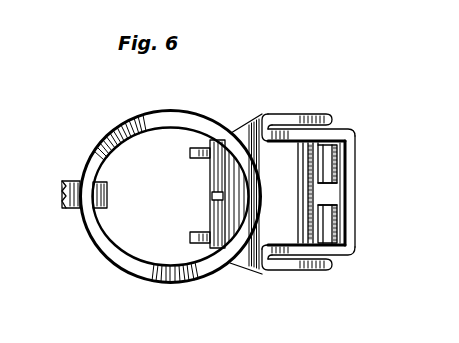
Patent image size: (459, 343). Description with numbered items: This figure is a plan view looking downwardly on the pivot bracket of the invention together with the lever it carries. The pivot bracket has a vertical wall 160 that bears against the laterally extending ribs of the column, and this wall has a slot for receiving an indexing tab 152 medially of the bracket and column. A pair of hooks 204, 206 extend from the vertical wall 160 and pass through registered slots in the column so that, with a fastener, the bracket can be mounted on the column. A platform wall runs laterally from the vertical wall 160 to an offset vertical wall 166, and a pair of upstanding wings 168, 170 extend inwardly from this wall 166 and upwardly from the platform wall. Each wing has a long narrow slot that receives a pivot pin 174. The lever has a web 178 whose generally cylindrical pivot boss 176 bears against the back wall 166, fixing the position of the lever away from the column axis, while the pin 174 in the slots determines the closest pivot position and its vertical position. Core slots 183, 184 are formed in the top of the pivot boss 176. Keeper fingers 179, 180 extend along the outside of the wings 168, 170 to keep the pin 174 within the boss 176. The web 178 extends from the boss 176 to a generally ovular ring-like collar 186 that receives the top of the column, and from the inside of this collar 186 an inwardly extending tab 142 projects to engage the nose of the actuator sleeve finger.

The inwardly extending tab 142 is at (108, 208).
The indexing tab 152 is at (217, 194).
The vertical wall 160 is at (210, 176).
The offset vertical wall 166 is at (349, 176).
The upstanding wing 168 is at (322, 252).
The upstanding wing 170 is at (320, 133).
The pivot pin 174 is at (330, 150).
The pivot boss 176 is at (337, 222).
The web 178 is at (290, 188).
The keeper finger 179 is at (314, 271).
The keeper finger 180 is at (310, 93).
The core slot 183 is at (325, 163).
The core slot 184 is at (325, 225).
The ring-like collar 186 is at (160, 127).
The hook 204 is at (197, 233).
The hook 206 is at (192, 155).